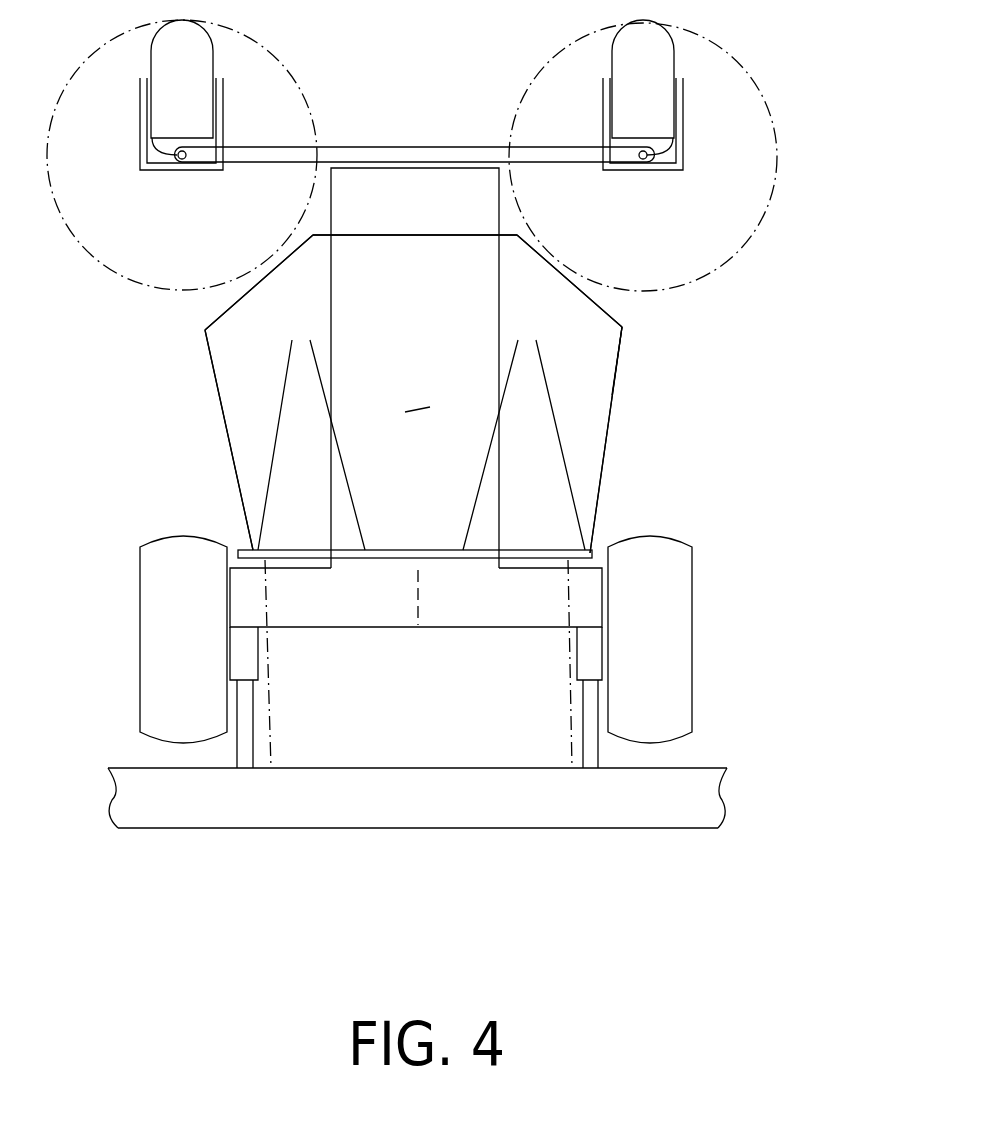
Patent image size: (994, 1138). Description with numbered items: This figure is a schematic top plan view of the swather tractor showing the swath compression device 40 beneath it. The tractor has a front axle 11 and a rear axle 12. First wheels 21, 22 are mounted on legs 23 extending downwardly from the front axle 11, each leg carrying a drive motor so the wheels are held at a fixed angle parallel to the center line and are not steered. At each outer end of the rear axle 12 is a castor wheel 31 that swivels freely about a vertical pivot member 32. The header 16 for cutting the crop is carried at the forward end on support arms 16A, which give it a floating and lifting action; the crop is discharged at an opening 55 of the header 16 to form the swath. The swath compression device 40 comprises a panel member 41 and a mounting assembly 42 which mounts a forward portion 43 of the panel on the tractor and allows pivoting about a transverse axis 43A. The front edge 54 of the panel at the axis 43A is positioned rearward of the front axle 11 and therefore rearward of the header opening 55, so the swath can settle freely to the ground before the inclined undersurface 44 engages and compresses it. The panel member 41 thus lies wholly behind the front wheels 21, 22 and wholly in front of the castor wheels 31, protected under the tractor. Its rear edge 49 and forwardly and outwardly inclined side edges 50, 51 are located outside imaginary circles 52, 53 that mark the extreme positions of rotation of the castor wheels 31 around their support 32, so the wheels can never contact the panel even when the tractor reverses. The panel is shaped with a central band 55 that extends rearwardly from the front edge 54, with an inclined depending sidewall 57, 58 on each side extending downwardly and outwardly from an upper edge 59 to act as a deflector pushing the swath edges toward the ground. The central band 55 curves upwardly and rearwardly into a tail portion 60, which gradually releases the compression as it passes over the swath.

The front axle 11 is at (590, 585).
The rear axle 12 is at (365, 150).
The header 16 is at (292, 845).
The support arms 16A is at (245, 722).
The first wheel 21 is at (678, 635).
The first wheel 22 is at (175, 637).
The legs 23 is at (243, 647).
The castor wheel 31 is at (647, 82).
The vertical pivot member 32 is at (650, 162).
The swath compression device 40 is at (645, 355).
The panel member 41 is at (620, 383).
The mounting assembly 42 is at (459, 576).
The forward portion 43 is at (385, 532).
The transverse axis 43A is at (587, 540).
The undersurface 44 is at (416, 396).
The rear edge 49 is at (425, 232).
The side edge 50 is at (243, 300).
The side edge 51 is at (587, 297).
The imaginary circle 52 is at (297, 77).
The imaginary circle 53 is at (717, 45).
The front edge 54 is at (430, 548).
The central band 55 is at (418, 328).
The sidewall 57 is at (237, 431).
The sidewall 58 is at (593, 413).
The upper edge 59 is at (275, 480).
The tail portion 60 is at (452, 177).